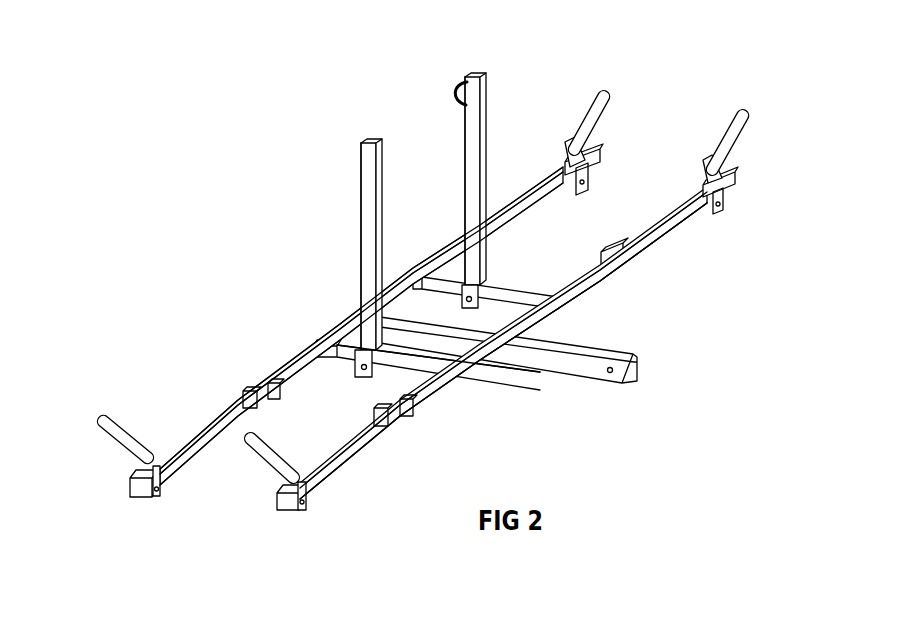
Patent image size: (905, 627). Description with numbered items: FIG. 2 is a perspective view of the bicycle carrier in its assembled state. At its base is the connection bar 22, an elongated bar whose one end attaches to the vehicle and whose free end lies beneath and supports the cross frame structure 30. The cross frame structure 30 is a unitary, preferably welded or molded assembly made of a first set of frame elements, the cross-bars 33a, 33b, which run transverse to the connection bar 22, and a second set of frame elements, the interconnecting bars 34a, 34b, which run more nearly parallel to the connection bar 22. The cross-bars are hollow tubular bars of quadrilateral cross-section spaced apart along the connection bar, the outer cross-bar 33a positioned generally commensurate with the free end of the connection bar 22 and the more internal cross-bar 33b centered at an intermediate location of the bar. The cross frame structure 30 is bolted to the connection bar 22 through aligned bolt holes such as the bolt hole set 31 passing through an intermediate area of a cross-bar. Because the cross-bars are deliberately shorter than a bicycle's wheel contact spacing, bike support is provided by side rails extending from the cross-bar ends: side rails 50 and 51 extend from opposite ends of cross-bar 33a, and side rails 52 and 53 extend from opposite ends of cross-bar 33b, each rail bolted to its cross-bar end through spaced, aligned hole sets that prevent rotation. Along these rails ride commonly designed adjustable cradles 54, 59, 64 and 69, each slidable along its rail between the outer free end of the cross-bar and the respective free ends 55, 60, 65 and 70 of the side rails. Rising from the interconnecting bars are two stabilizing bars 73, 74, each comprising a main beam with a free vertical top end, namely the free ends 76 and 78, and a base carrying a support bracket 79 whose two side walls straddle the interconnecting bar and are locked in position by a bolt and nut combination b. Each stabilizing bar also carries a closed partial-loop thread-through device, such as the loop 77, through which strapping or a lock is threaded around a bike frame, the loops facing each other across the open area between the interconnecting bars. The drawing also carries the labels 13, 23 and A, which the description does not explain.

The frame 13 is at (483, 358).
The connection bar 22 is at (580, 347).
The hitch pin hole 23 is at (633, 374).
The cross frame structure 30 is at (391, 280).
The aligned bolt hole set 31 is at (530, 328).
The cross-bar 33a is at (340, 322).
The cross-bar 33b is at (463, 373).
The interconnecting bar 34a is at (400, 371).
The interconnecting bar 34b is at (537, 262).
The side rail 50 is at (200, 460).
The side rail 51 is at (520, 197).
The side rail 52 is at (350, 467).
The side rail 53 is at (692, 226).
The adjustable cradle 54 is at (127, 432).
The free end of side rail 55 is at (130, 483).
The adjustable cradle 59 is at (570, 162).
The free end of side rail 60 is at (603, 152).
The adjustable cradle 64 is at (248, 474).
The free end of side rail 65 is at (278, 512).
The adjustable cradle 69 is at (750, 122).
The free end of side rail 70 is at (730, 181).
The stabilizing bar 73 is at (360, 187).
The stabilizing bar 74 is at (467, 124).
The free end of main beam 76 is at (362, 138).
The strap and/or lock thread through device 77 is at (466, 82).
The free end of main beam 78 is at (481, 70).
The support bracket 79 is at (355, 366).
The clamp A is at (397, 414).
The bolt and nut combination b is at (460, 300).